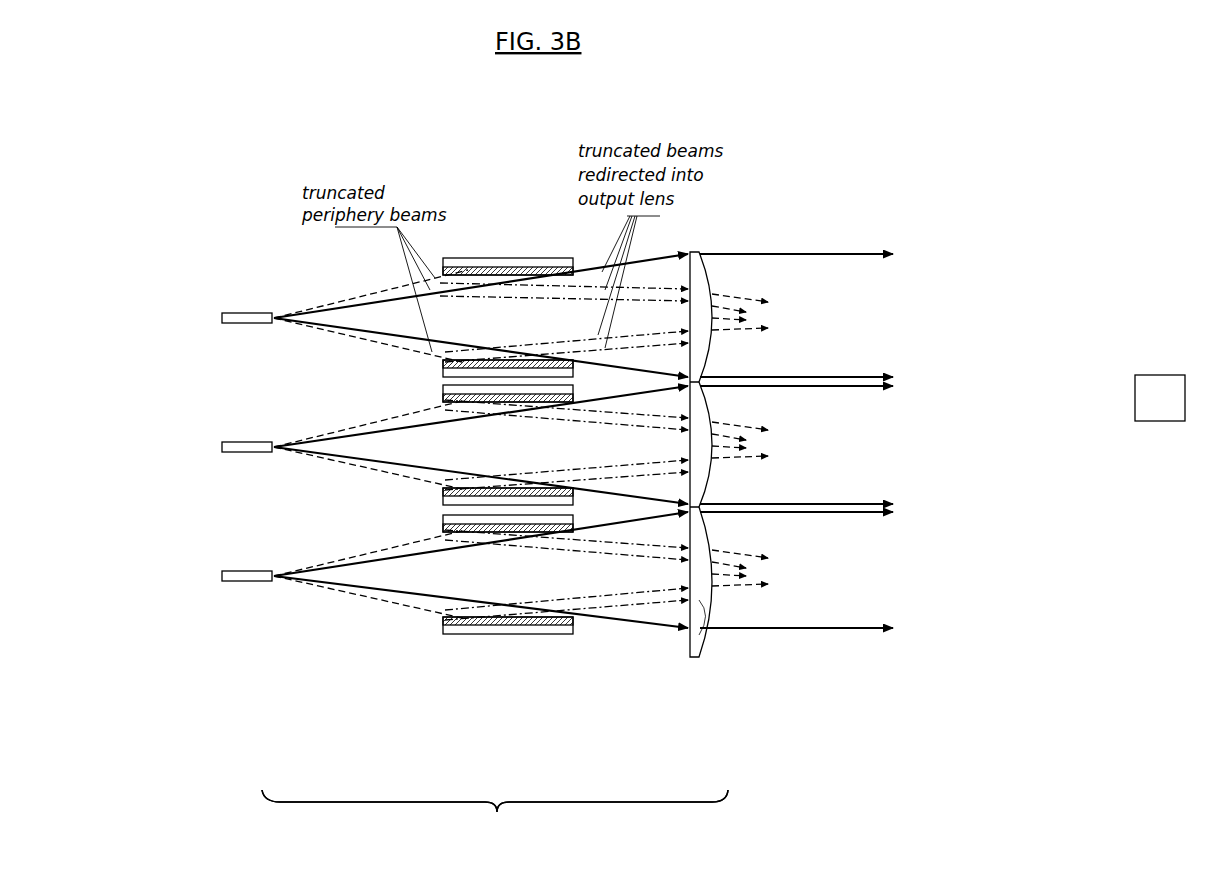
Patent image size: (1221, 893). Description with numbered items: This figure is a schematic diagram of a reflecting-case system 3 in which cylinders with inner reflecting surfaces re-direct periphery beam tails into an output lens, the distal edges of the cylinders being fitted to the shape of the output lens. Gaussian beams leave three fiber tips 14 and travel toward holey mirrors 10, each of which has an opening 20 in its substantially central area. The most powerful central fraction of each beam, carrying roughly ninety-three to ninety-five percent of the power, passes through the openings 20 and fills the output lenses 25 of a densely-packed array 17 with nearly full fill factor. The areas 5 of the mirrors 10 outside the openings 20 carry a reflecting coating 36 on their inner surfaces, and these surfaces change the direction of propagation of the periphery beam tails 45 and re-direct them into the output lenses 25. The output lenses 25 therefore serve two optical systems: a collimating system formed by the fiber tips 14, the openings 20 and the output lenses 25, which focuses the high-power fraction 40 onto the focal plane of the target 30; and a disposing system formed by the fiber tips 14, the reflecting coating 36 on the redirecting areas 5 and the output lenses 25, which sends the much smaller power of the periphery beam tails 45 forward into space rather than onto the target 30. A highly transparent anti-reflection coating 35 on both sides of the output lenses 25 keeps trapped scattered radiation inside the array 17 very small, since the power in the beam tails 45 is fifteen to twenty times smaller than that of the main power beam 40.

The system 3 is at (240, 168).
The areas 5 is at (530, 270).
The mirrors 10 is at (452, 258).
The fiber tips 14 is at (266, 308).
The densely-packed array 17 is at (495, 816).
The openings 20 is at (500, 511).
The output lenses 25 is at (703, 254).
The target 30 is at (1160, 398).
The anti-reflection coating 35 is at (688, 612).
The reflecting coating 36 is at (497, 736).
The high-power fraction 40 is at (832, 429).
The periphery beam tails 45 is at (853, 434).